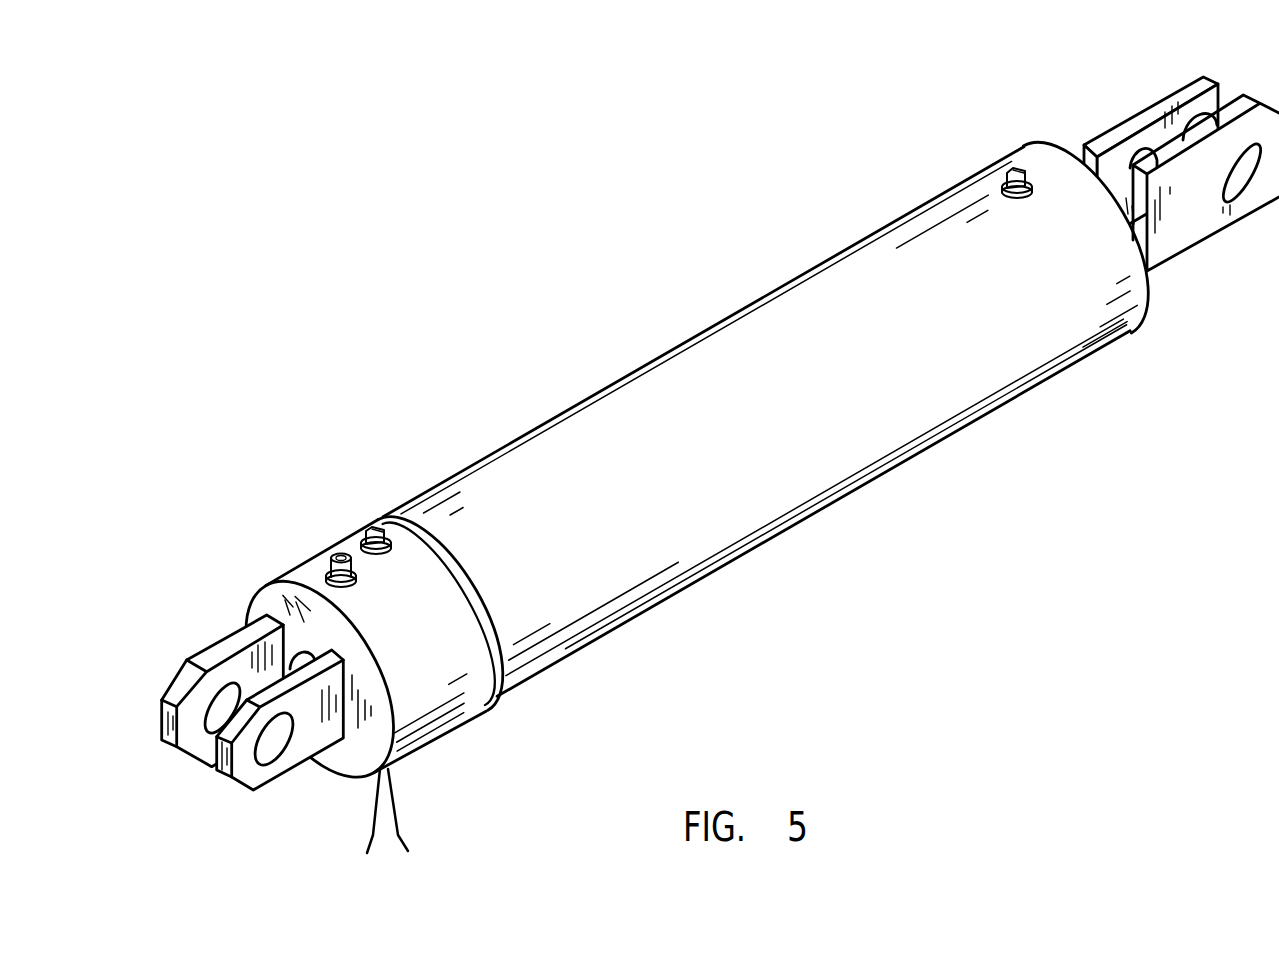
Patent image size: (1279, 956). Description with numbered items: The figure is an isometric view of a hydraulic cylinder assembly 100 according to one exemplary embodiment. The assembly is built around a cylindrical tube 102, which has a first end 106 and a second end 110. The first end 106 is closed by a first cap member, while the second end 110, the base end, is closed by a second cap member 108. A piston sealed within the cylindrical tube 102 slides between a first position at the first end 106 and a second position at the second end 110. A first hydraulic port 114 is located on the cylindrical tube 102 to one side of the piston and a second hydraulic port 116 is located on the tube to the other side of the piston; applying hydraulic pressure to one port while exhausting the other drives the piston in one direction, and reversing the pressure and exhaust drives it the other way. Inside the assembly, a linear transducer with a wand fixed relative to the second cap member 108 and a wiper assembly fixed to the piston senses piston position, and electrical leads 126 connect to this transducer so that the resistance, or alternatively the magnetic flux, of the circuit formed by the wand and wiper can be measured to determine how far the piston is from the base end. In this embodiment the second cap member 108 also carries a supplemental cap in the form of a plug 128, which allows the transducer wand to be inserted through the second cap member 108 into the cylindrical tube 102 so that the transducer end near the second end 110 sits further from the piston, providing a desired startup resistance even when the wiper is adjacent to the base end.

The hydraulic cylinder assembly 100 is at (720, 459).
The cylindrical tube 102 is at (595, 408).
The first end 106 is at (1100, 335).
The second cap member 108 is at (445, 713).
The second end 110 is at (563, 632).
The first hydraulic port 114 is at (1022, 160).
The second hydraulic port 116 is at (377, 527).
The electrical leads 126 is at (402, 813).
The plug 128 is at (296, 647).